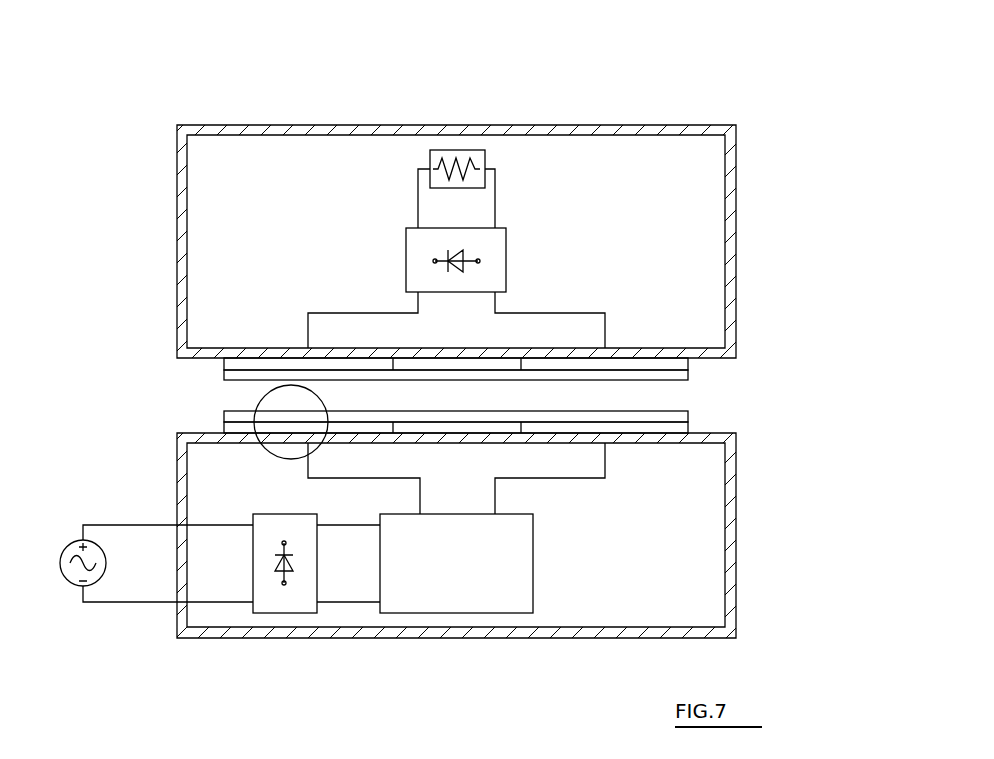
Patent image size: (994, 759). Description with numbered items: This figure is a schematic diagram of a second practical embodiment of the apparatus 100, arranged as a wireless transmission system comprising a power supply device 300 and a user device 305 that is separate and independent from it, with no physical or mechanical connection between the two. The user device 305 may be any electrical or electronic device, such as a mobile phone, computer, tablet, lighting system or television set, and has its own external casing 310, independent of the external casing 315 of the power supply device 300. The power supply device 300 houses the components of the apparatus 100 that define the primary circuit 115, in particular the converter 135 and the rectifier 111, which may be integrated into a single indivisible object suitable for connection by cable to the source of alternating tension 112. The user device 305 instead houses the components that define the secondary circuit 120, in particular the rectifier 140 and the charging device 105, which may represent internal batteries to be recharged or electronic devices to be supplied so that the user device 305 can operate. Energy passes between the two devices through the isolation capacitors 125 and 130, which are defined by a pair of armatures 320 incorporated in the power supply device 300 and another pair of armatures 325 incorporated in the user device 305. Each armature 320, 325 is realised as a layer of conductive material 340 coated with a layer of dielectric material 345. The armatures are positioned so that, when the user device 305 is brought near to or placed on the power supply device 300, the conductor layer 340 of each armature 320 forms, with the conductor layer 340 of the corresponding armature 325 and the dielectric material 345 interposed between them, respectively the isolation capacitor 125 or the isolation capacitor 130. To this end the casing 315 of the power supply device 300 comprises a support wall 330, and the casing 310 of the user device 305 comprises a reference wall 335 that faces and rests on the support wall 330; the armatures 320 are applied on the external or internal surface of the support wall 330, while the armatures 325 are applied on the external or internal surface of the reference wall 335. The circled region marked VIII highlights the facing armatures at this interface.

The apparatus 100 is at (747, 73).
The charging device 105 is at (472, 158).
The rectifier 111 is at (262, 605).
The source of alternating tension 112 is at (68, 578).
The primary circuit 115 is at (557, 583).
The secondary circuit 120 is at (385, 265).
The isolation capacitor 125 is at (222, 400).
The isolation capacitor 130 is at (692, 393).
The converter 135 is at (440, 595).
The rectifier 140 is at (497, 250).
The power supply device 300 is at (482, 643).
The user device 305 is at (172, 110).
The casing 310 is at (732, 250).
The casing 315 is at (733, 555).
The armatures 320 is at (217, 425).
The armatures 325 is at (217, 373).
The support wall 330 is at (623, 443).
The reference wall 335 is at (333, 353).
The layer of conductive material 340 is at (263, 363).
The layer of dielectric material 345 is at (533, 378).
The detail region VIII is at (263, 395).